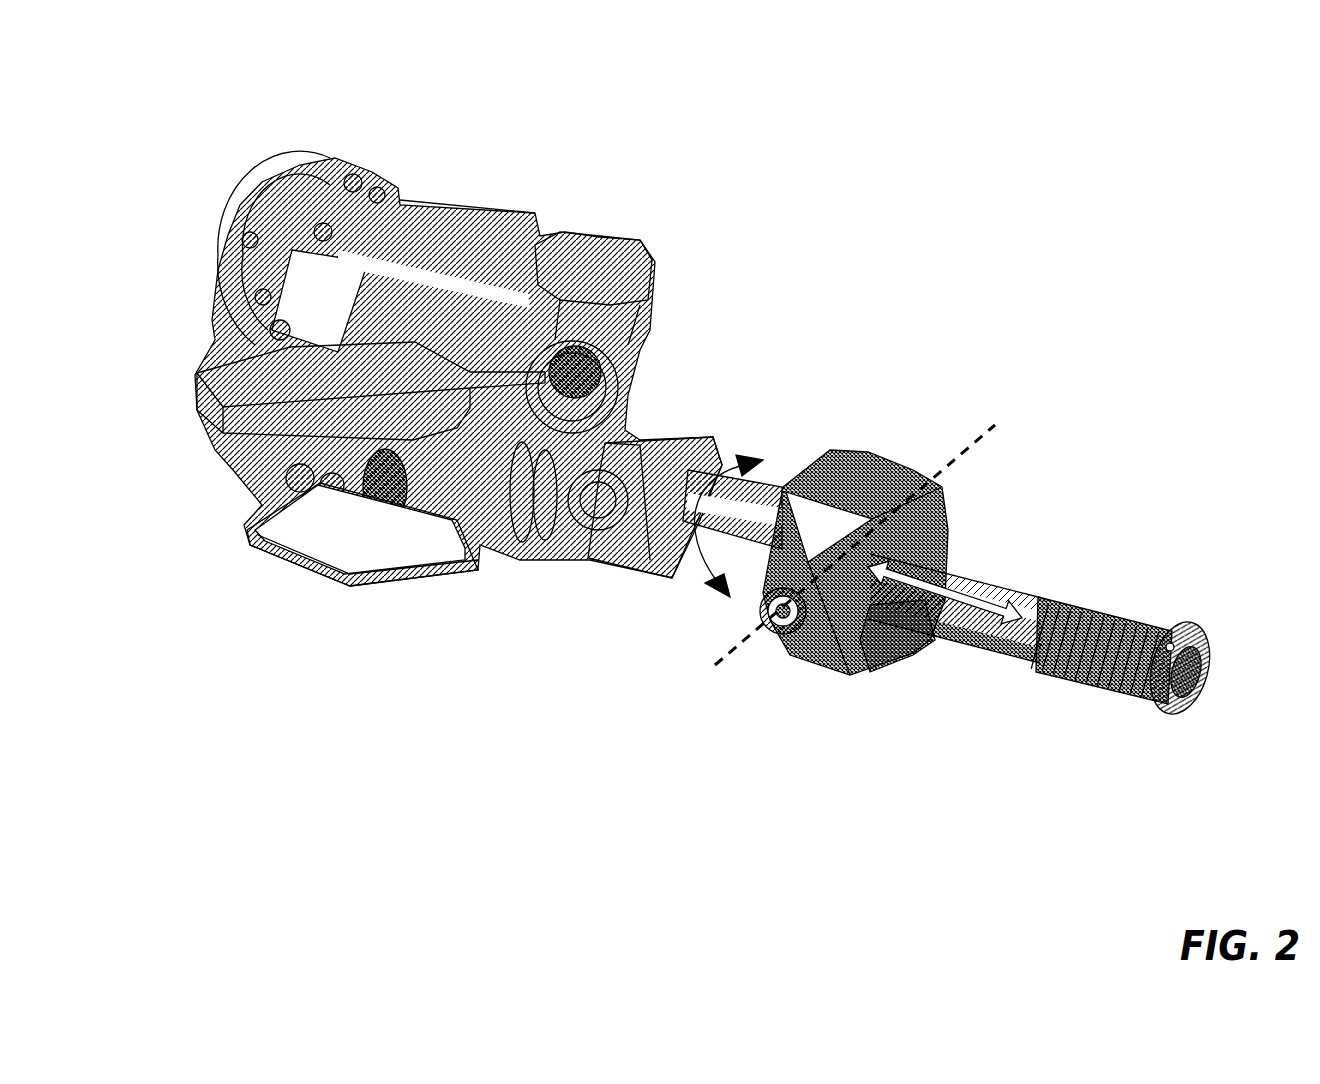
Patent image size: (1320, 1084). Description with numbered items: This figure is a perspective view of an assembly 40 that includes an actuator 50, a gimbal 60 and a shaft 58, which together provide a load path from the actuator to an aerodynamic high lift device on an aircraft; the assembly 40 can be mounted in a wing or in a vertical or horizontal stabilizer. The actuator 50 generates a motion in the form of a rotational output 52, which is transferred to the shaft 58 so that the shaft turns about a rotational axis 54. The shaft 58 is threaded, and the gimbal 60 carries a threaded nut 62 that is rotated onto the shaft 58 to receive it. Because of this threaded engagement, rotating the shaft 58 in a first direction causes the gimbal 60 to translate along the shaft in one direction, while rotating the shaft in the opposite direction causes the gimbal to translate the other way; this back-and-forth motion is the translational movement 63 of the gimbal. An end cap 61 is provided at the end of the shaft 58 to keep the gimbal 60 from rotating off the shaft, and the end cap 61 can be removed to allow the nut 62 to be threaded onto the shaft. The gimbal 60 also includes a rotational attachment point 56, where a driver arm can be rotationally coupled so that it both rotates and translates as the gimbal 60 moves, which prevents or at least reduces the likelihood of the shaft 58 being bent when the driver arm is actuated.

The assembly 40 is at (250, 106).
The actuator 50 is at (427, 270).
The rotational output 52 is at (733, 452).
The rotational axis 54 is at (975, 438).
The rotational attachment point 56 is at (773, 627).
The shaft 58 is at (983, 623).
The gimbal 60 is at (847, 450).
The end cap 61 is at (1163, 718).
The nut 62 is at (862, 672).
The translational movement 63 is at (937, 588).